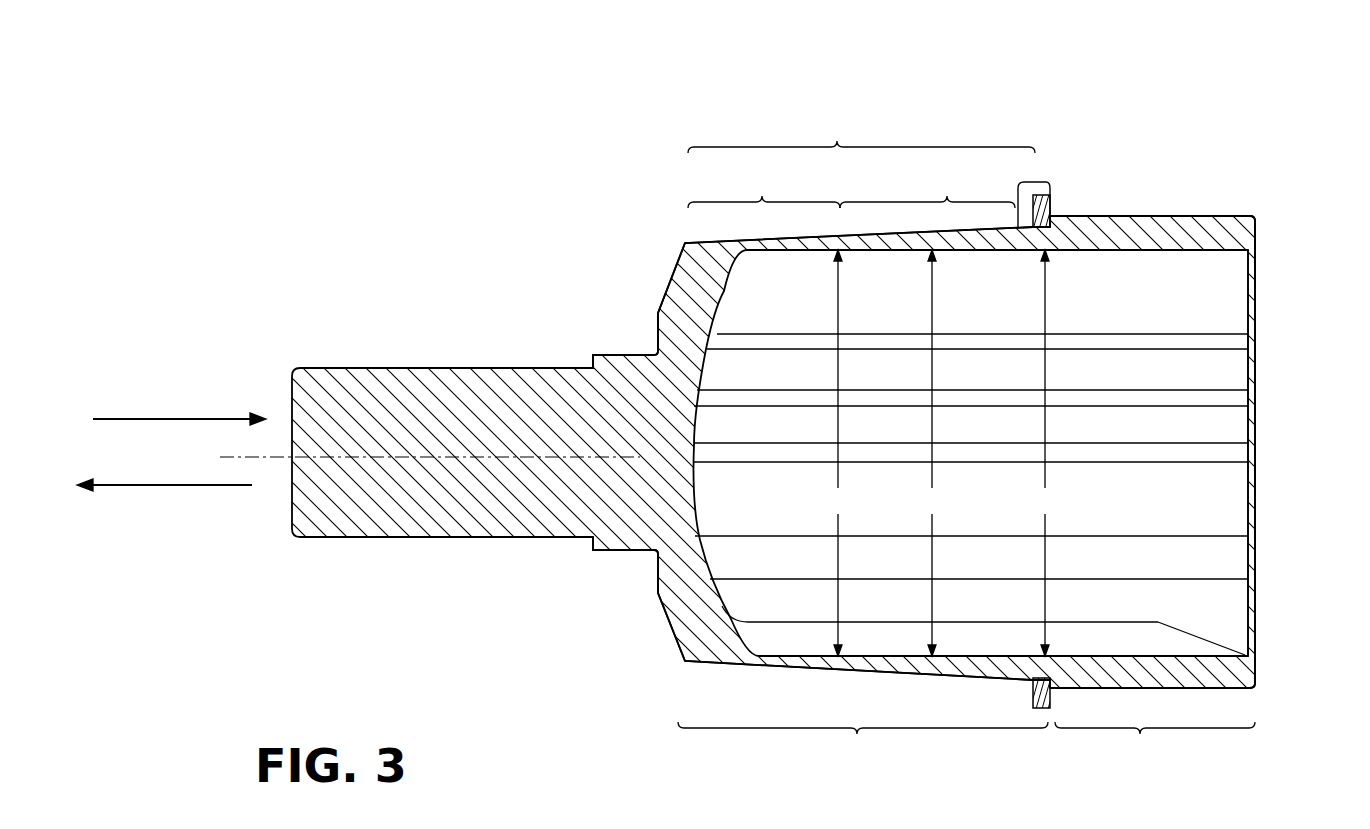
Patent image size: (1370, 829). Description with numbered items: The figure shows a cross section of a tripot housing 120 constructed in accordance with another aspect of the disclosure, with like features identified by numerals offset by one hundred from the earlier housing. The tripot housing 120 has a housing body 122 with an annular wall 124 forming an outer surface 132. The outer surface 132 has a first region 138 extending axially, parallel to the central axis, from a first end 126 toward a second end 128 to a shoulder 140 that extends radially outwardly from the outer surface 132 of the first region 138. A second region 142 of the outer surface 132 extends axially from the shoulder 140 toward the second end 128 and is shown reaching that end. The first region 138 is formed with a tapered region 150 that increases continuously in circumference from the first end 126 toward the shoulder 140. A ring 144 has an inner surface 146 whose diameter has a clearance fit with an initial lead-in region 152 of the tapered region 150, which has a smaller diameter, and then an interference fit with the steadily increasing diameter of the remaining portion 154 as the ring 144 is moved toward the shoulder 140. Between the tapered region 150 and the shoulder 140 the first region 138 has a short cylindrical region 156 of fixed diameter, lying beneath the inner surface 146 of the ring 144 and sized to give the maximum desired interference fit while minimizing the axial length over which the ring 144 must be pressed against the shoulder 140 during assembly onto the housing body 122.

The tripot housing 120 is at (1183, 134).
The housing body 122 is at (705, 640).
The annular wall 124 is at (1230, 235).
The first end 126 is at (668, 614).
The second end 128 is at (1256, 670).
The outer surface 132 is at (1132, 214).
The first region 138 is at (863, 742).
The shoulder 140 is at (1033, 682).
The second region 142 is at (1155, 742).
The ring 144 is at (1050, 222).
The inner surface 146 is at (1042, 232).
The tapered region 150 is at (861, 133).
The initial lead-in region 152 is at (764, 188).
The remaining portion 154 is at (927, 188).
The cylindrical region 156 is at (1035, 182).